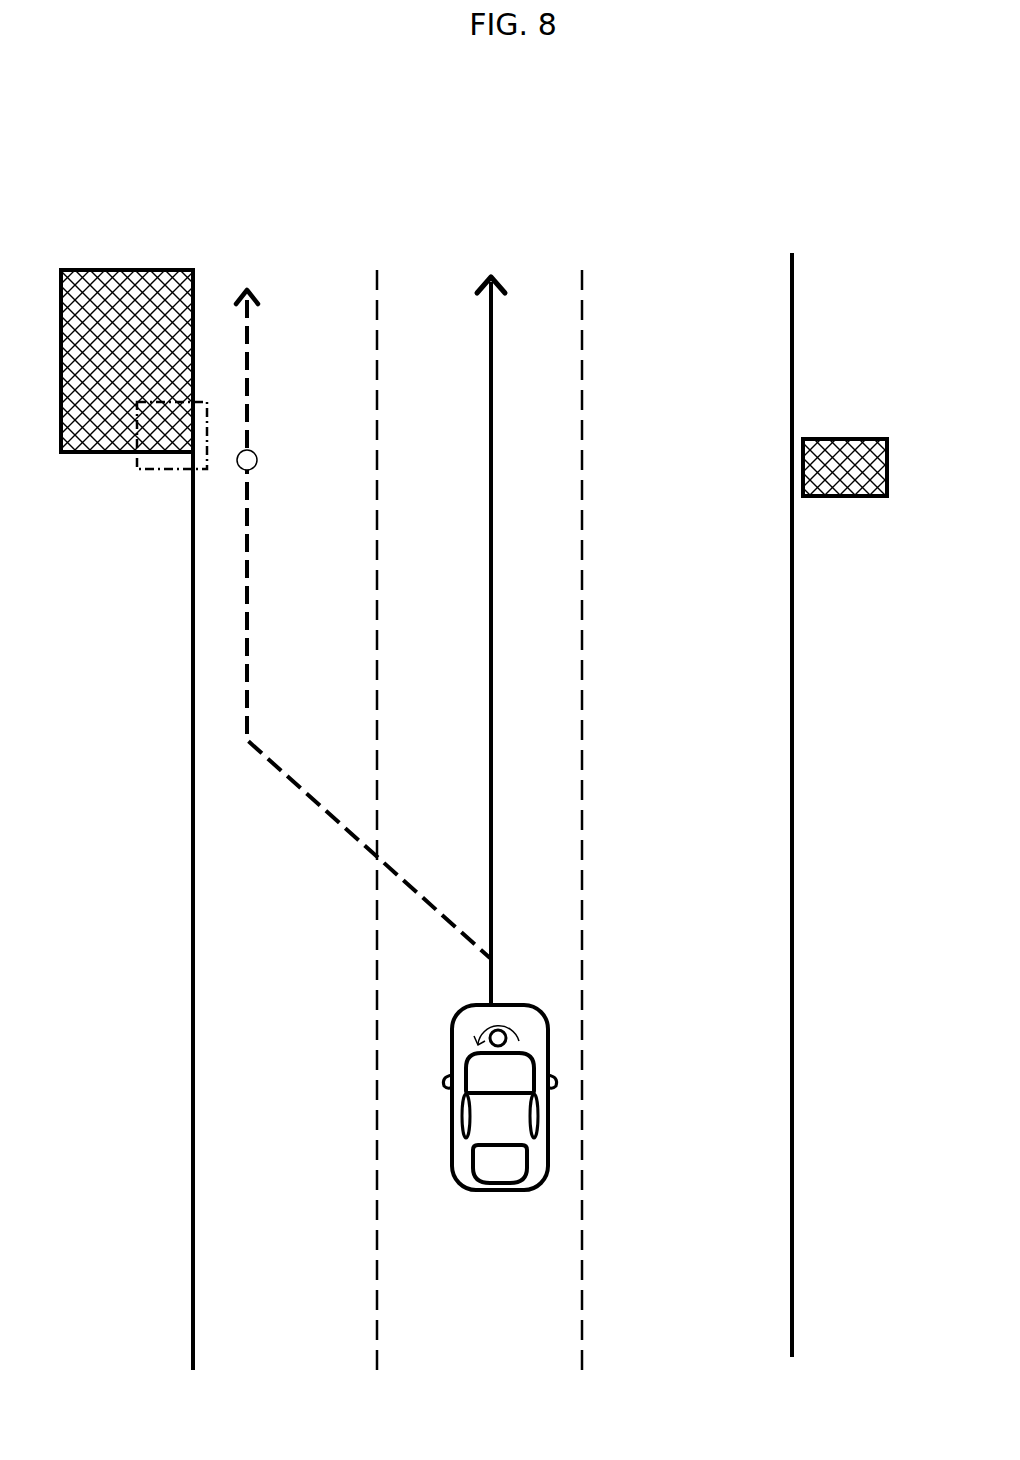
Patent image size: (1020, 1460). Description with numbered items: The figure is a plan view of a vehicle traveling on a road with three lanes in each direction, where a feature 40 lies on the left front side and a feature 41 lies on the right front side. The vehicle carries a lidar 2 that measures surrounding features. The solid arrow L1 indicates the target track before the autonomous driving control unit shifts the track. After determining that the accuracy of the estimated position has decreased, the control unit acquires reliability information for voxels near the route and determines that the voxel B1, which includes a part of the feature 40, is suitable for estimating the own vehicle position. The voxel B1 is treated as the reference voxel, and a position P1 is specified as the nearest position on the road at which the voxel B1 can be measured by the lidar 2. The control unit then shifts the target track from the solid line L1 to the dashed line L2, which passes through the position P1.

The feature 40 is at (114, 268).
The feature 41 is at (837, 437).
The voxel B1 is at (152, 471).
The position P1 is at (257, 466).
The target track L1 is at (489, 517).
The target track L2 is at (250, 676).
The lidar 2 is at (505, 1043).